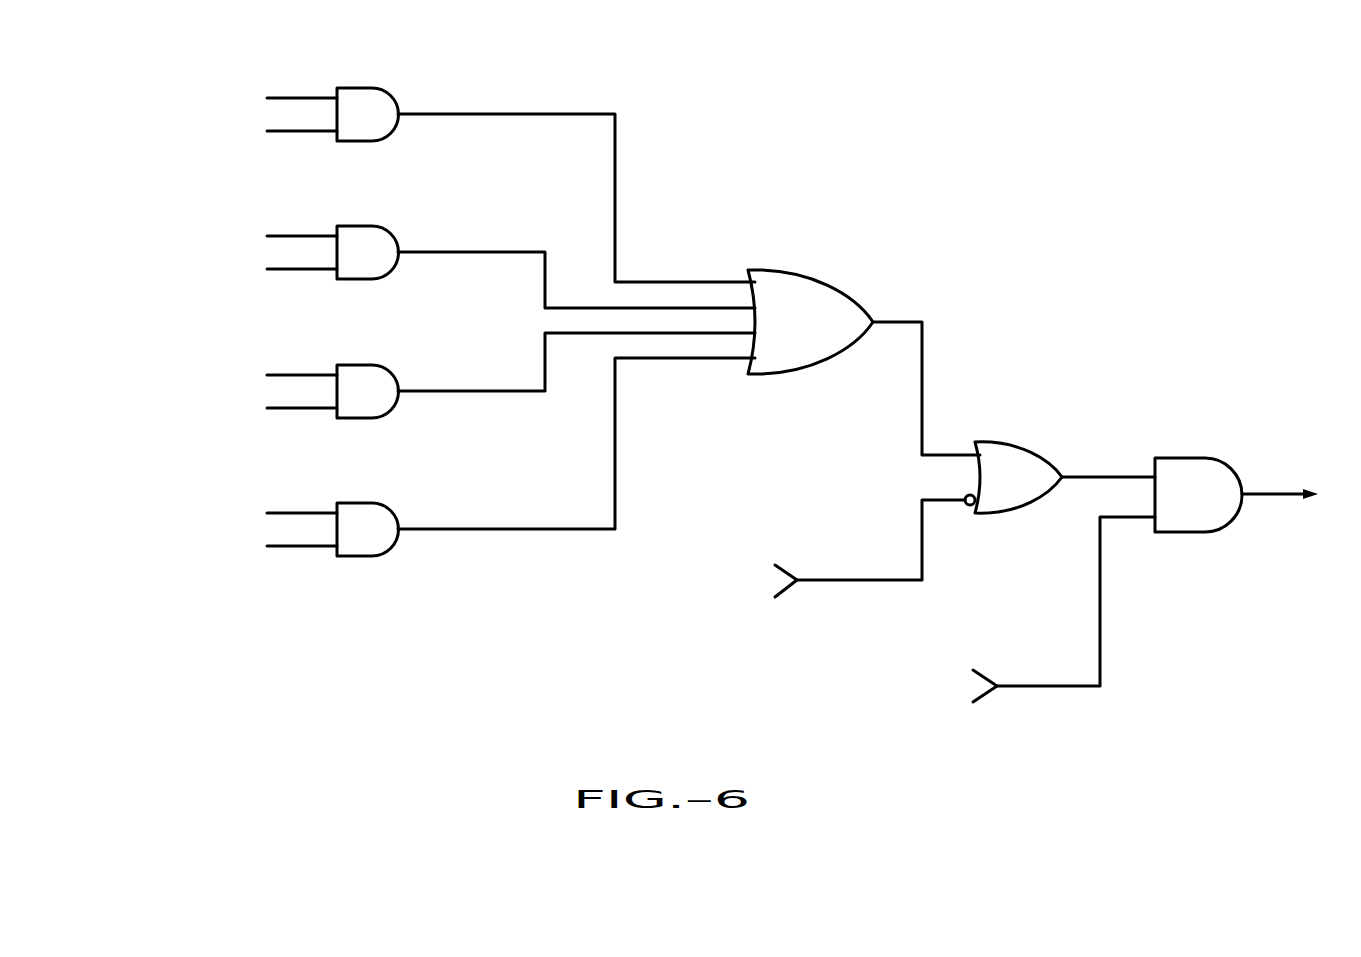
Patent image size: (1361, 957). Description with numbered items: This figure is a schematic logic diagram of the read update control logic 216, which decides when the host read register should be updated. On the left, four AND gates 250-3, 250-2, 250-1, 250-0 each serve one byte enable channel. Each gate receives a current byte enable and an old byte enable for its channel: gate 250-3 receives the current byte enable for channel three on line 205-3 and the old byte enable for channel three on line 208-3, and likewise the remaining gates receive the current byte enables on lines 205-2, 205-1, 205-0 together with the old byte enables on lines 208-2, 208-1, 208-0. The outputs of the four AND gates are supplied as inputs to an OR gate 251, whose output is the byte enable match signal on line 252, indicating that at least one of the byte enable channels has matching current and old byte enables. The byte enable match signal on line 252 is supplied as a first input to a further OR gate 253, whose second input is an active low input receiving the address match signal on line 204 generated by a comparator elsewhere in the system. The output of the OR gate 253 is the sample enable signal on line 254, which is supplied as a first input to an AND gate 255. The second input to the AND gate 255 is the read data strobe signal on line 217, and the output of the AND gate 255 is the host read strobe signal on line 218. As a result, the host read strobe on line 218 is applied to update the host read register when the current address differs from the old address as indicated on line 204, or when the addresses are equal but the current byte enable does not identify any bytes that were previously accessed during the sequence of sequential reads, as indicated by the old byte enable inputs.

The current byte enable line for channel 3 205-3 is at (299, 98).
The current byte enable line for channel 2 205-2 is at (299, 236).
The current byte enable line for channel 1 205-1 is at (299, 375).
The current byte enable line for channel 0 205-0 is at (299, 513).
The old byte enable line for channel 3 208-3 is at (305, 131).
The old byte enable line for channel 2 208-2 is at (305, 269).
The old byte enable line for channel 1 208-1 is at (305, 408).
The old byte enable line for channel 0 208-0 is at (300, 547).
The AND gate 250-3 is at (368, 88).
The AND gate 250-2 is at (368, 226).
The AND gate 250-1 is at (368, 365).
The AND gate 250-0 is at (368, 503).
The OR gate 251 is at (795, 270).
The byte enable match signal line 252 is at (922, 375).
The OR gate 253 is at (995, 442).
The sample enable signal line 254 is at (1090, 477).
The AND gate 255 is at (1192, 458).
The host read strobe signal line 218 is at (1294, 498).
The address match signal line 204 is at (833, 580).
The read data strobe signal line 217 is at (1025, 686).
The read update control logic 216 is at (436, 662).